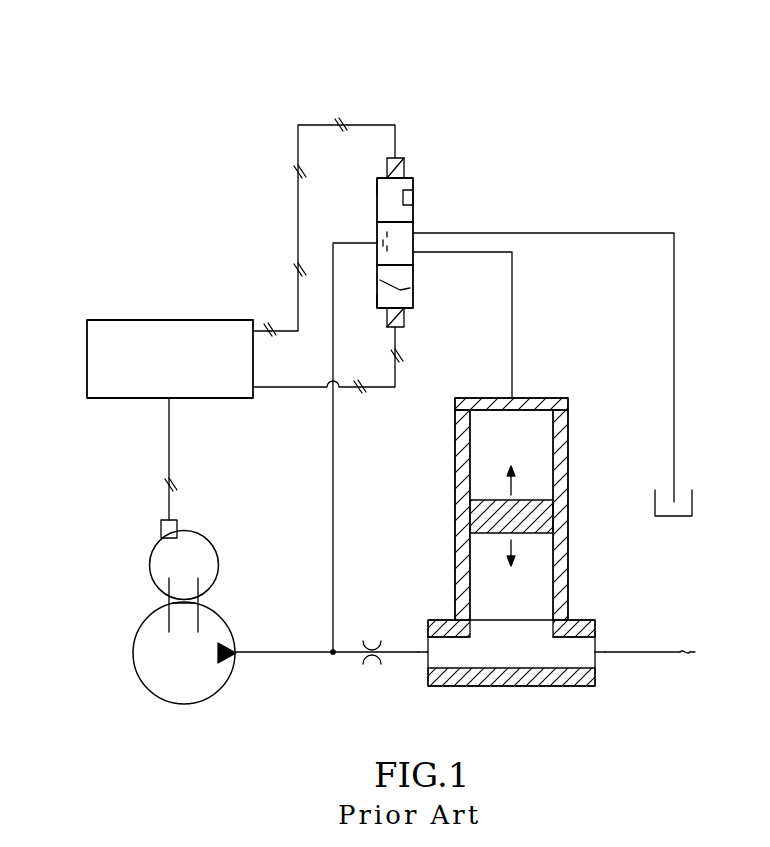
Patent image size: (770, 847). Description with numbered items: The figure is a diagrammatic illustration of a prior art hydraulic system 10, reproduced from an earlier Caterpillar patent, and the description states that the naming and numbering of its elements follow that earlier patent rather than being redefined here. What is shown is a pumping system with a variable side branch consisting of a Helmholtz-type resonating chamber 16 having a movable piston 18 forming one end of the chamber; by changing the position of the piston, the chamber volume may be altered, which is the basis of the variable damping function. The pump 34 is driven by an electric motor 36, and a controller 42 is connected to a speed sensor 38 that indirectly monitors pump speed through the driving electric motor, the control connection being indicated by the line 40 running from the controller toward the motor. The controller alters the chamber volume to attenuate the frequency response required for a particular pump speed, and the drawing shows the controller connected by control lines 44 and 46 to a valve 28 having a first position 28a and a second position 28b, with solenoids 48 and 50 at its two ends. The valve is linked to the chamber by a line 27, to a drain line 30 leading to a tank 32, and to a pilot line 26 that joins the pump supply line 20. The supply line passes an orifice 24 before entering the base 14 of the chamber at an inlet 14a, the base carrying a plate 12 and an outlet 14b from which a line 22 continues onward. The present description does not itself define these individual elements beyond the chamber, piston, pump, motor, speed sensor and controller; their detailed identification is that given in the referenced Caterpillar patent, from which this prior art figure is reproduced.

The hydraulic system 10 is at (612, 77).
The pressure plate 12 is at (493, 689).
The housing base 14 is at (545, 688).
The inlet port 14a is at (426, 657).
The outlet port 14b is at (598, 667).
The cylinder 16 is at (541, 461).
The piston 18 is at (548, 524).
The supply line 20 is at (342, 654).
The return line 22 is at (628, 652).
The orifice 24 is at (372, 640).
The pilot line 26 is at (336, 520).
The valve outlet line 27 is at (513, 305).
The directional control valve 28 is at (414, 200).
The first valve position 28a is at (383, 178).
The second valve position 28b is at (378, 309).
The drain line 30 is at (675, 368).
The tank 32 is at (692, 508).
The pump 34 is at (151, 668).
The motor 36 is at (160, 565).
The motor connector 38 is at (161, 528).
The control line 40 is at (169, 461).
The controller 42 is at (140, 320).
The first solenoid control line 44 is at (331, 124).
The second solenoid control line 46 is at (290, 388).
The first solenoid 48 is at (405, 168).
The second solenoid 50 is at (404, 321).